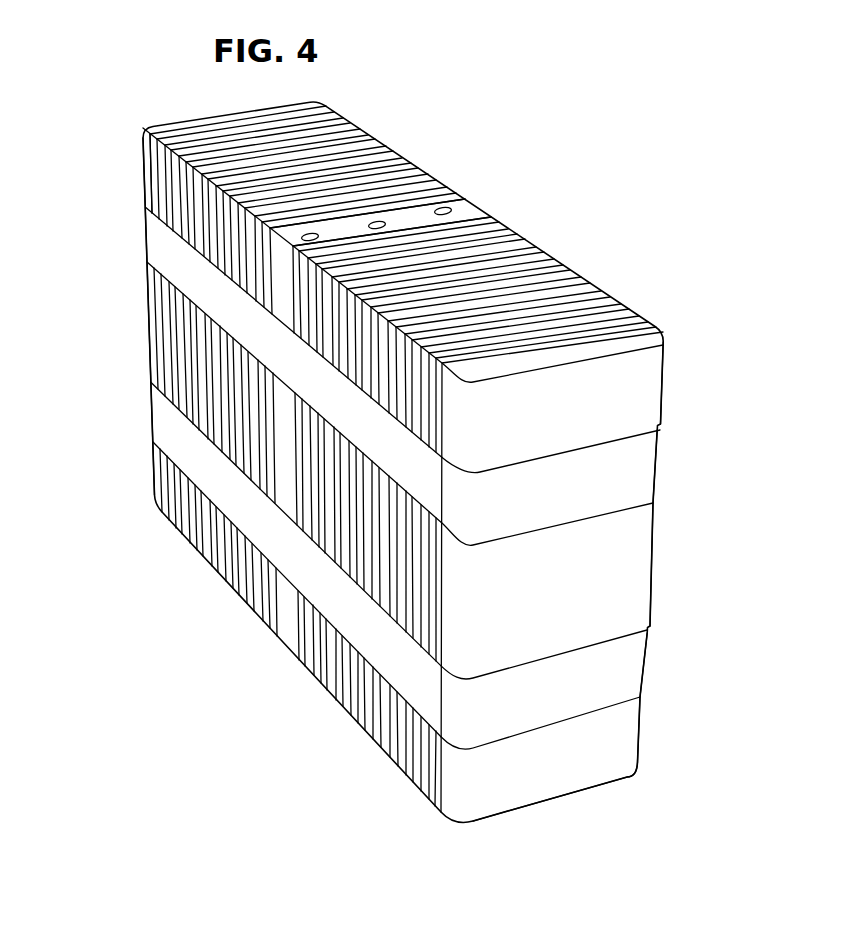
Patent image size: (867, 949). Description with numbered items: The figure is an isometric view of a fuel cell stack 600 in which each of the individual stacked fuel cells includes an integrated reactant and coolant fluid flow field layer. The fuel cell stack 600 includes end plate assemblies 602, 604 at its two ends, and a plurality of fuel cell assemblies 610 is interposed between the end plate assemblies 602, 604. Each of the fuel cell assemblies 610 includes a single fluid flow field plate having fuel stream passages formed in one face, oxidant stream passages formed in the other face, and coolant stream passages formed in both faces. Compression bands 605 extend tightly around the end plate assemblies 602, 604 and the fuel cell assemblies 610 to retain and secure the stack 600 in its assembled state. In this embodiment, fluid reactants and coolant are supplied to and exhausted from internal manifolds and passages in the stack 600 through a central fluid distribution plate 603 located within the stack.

The fuel cell stack 600 is at (432, 144).
The end plate assembly 602 is at (140, 131).
The central fluid distribution plate 603 is at (470, 206).
The end plate assembly 604 is at (651, 381).
The compression bands 605 is at (168, 418).
The fuel cell assemblies 610 is at (303, 672).